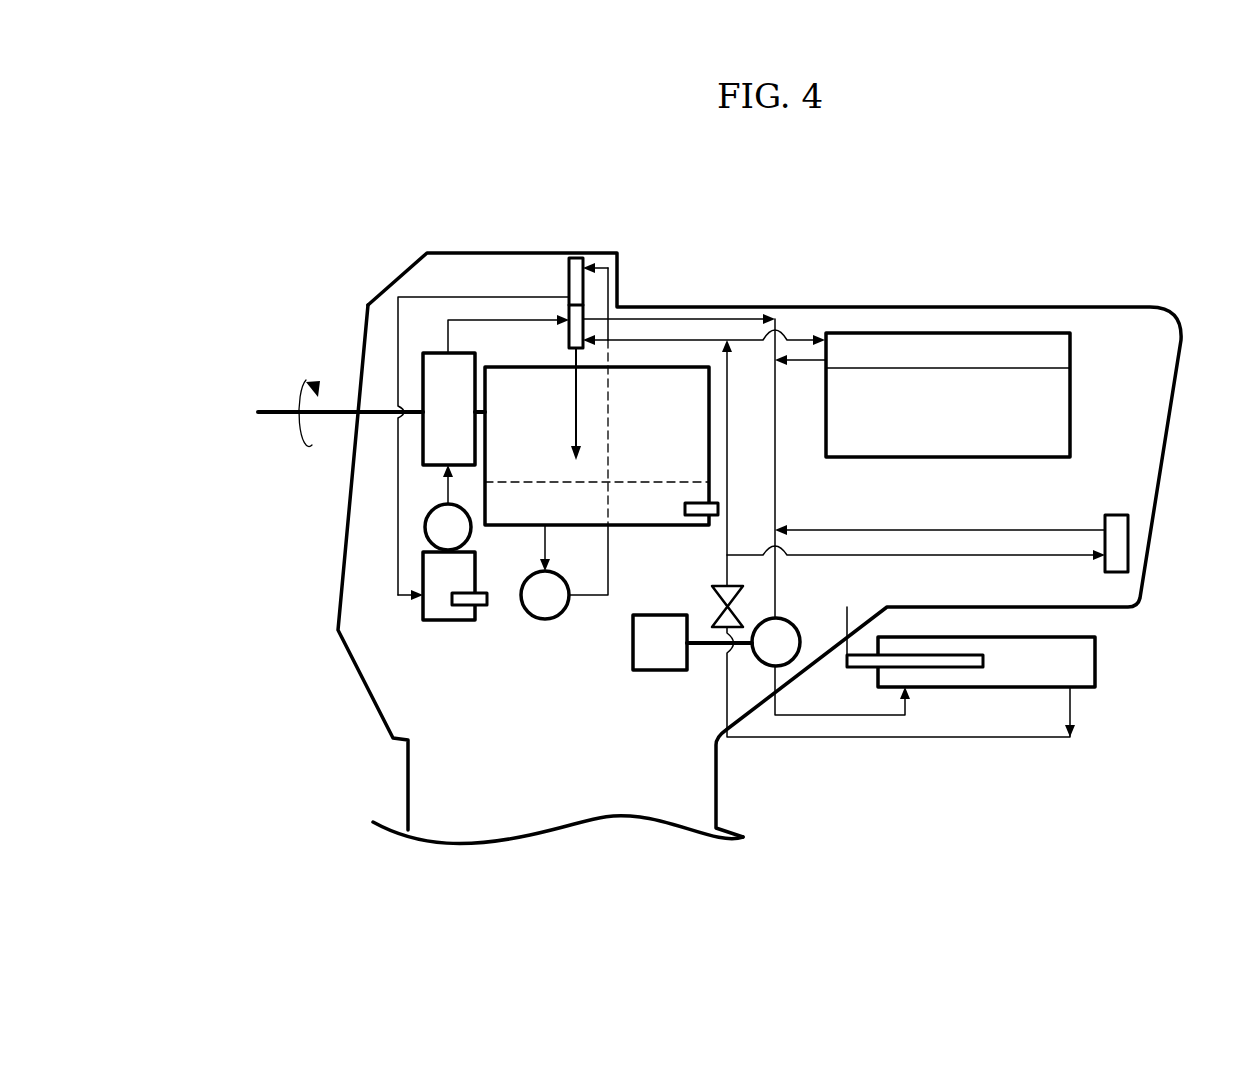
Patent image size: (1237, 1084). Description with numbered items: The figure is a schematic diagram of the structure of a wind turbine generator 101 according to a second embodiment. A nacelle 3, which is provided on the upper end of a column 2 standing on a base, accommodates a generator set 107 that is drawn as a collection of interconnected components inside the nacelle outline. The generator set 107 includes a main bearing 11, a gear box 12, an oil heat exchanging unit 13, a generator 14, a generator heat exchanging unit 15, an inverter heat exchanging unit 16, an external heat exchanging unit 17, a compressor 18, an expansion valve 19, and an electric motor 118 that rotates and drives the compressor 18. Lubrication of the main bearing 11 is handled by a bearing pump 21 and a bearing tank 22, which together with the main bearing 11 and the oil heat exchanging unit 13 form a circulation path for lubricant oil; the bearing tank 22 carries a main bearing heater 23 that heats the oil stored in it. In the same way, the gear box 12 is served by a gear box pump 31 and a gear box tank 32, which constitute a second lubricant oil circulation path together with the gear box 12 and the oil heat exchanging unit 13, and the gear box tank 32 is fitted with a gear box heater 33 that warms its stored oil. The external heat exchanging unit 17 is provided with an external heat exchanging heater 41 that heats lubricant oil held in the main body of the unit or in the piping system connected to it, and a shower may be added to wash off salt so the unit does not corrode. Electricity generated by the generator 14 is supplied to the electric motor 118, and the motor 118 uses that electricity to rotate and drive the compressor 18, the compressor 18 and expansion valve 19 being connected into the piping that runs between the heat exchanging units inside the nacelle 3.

The wind turbine generator 101 is at (214, 242).
The column 2 is at (716, 783).
The nacelle 3 is at (1068, 300).
The main bearing 11 is at (423, 368).
The gear box 12 is at (672, 378).
The oil heat exchanging unit 13 is at (577, 263).
The generator 14 is at (1070, 407).
The generator heat exchanging unit 15 is at (950, 338).
The inverter heat exchanging unit 16 is at (1128, 540).
The external heat exchanging unit 17 is at (1095, 657).
The compressor 18 is at (791, 626).
The expansion valve 19 is at (718, 586).
The bearing pump 21 is at (470, 538).
The bearing tank 22 is at (445, 617).
The main bearing heater 23 is at (482, 607).
The gear box pump 31 is at (545, 620).
The gear box tank 32 is at (650, 517).
The gear box heater 33 is at (718, 508).
The external heat exchanging heater 41 is at (960, 670).
The generator set 107 is at (773, 258).
The electric motor 118 is at (648, 672).